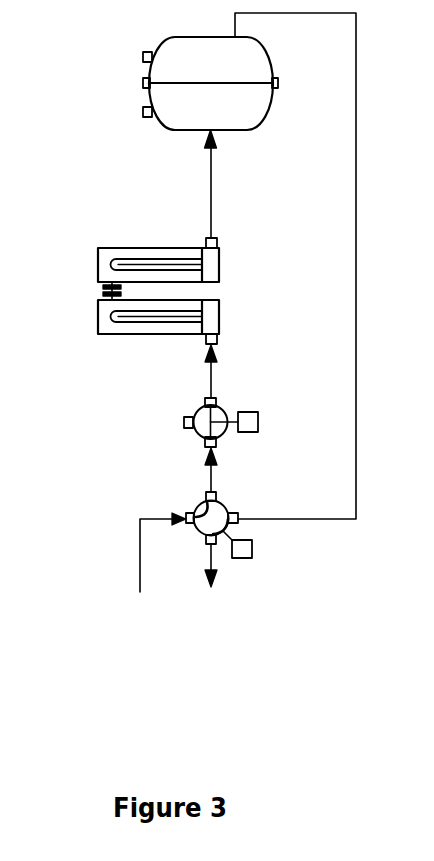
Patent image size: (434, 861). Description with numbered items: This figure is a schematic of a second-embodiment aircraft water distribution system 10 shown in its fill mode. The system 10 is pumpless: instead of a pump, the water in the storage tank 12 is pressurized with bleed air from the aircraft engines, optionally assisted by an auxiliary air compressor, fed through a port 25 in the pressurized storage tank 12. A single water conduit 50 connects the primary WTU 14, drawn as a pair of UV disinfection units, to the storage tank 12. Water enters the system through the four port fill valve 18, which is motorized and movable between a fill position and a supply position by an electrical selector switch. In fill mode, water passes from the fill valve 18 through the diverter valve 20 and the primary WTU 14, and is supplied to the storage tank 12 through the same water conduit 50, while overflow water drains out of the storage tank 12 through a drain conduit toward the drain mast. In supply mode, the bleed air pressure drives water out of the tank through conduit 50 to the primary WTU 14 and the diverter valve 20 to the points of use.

The system 10 is at (106, 446).
The storage tank 12 is at (268, 52).
The port 25 is at (278, 83).
The single water conduit 50 is at (211, 192).
The primary WTU 14 is at (135, 334).
The diverter valve 20 is at (228, 417).
The fill valve 18 is at (223, 505).